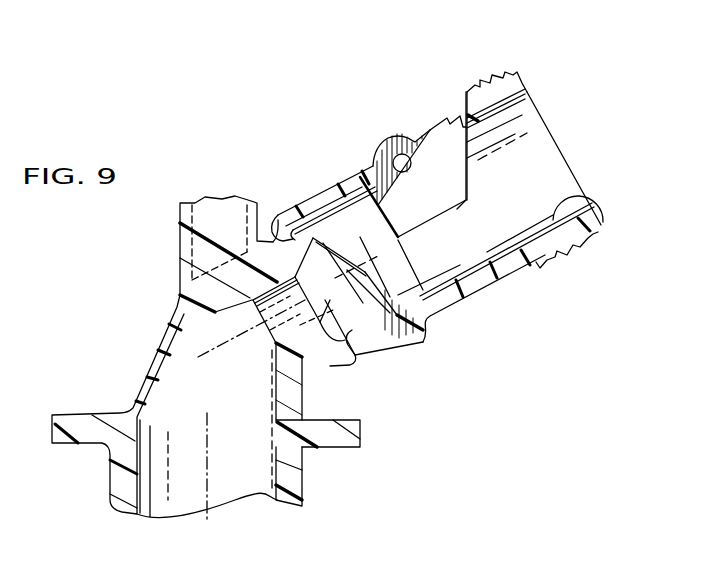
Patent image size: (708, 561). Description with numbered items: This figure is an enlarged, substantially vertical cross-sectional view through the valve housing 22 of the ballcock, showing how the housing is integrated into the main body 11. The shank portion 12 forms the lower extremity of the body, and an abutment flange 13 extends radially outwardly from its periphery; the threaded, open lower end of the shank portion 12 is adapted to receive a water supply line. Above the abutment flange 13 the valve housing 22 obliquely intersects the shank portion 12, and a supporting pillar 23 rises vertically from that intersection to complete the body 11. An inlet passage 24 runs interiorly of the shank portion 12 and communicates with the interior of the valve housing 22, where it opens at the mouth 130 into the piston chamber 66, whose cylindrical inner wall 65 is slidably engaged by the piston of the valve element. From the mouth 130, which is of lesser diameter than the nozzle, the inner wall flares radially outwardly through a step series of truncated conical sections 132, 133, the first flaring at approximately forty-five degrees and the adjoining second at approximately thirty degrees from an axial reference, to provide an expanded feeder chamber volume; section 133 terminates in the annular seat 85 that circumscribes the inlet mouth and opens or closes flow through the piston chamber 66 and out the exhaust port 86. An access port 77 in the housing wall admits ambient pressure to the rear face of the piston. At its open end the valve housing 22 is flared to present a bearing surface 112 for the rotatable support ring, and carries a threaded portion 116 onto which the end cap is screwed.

The main body 11 is at (133, 348).
The shank portion 12 is at (303, 482).
The abutment flange 13 is at (361, 432).
The valve housing 22 is at (327, 178).
The supporting pillar 23 is at (181, 225).
The inlet passage 24 is at (303, 358).
The cylindrical inner wall 65 is at (566, 198).
The piston chamber 66 is at (541, 165).
The access port 77 is at (433, 140).
The annular seat 85 is at (378, 300).
The exhaust port 86 is at (408, 343).
The bearing surface 112 is at (527, 92).
The threaded portion 116 is at (571, 250).
The mouth 130 is at (315, 236).
The truncated conical section 132 is at (330, 347).
The truncated conical section 133 is at (322, 260).